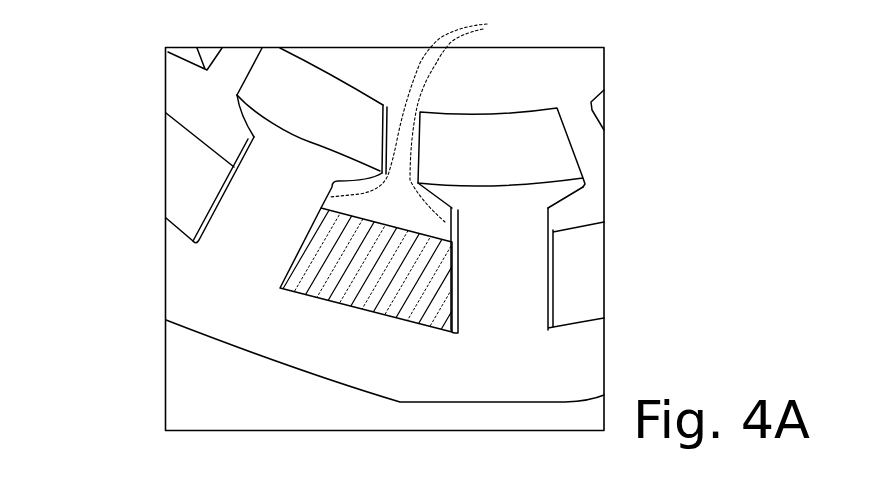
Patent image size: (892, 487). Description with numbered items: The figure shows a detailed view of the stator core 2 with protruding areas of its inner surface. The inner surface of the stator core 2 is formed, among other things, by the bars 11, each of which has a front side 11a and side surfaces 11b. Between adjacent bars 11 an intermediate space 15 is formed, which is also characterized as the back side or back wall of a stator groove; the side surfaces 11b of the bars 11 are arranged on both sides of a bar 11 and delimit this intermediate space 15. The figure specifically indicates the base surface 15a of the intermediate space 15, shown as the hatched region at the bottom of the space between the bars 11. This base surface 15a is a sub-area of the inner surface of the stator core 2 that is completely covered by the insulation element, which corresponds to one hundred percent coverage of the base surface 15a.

The stator core 2 is at (190, 272).
The bar 11 is at (250, 215).
The front side 11a is at (282, 95).
The side surface 11b is at (433, 116).
The intermediate space 15 is at (198, 102).
The base surface 15a is at (363, 307).